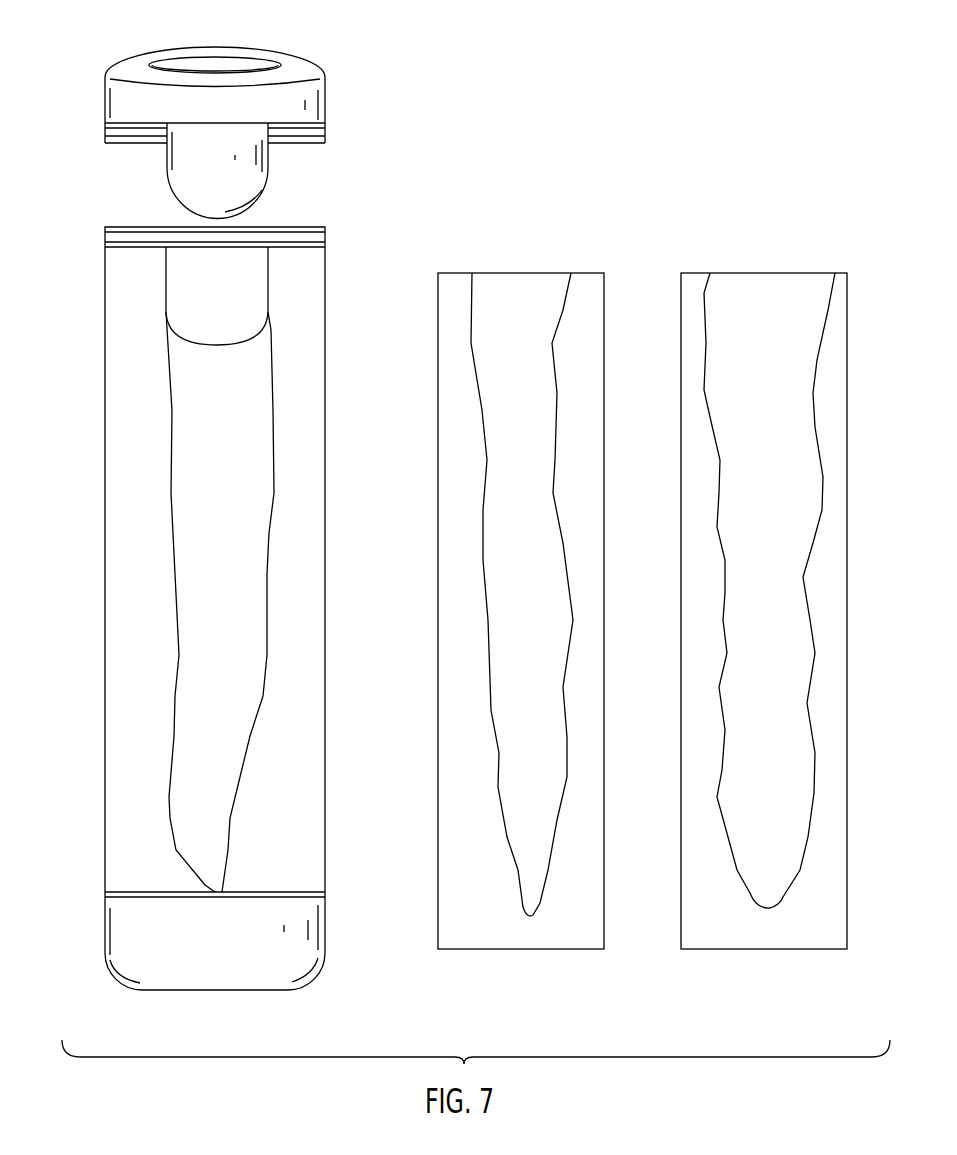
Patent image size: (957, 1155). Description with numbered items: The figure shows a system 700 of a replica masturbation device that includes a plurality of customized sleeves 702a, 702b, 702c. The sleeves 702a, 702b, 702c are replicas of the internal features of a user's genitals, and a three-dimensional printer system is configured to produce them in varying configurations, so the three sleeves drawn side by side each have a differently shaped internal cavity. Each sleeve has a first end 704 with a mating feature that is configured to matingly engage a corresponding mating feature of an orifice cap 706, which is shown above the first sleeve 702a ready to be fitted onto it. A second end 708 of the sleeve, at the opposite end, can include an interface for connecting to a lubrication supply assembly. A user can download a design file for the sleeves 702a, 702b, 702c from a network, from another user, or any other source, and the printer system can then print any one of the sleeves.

The system 700 is at (441, 194).
The customized sleeve 702a is at (123, 833).
The customized sleeve 702b is at (540, 933).
The customized sleeve 702c is at (760, 933).
The first end 704 is at (133, 248).
The orifice cap 706 is at (292, 53).
The second end 708 is at (275, 893).